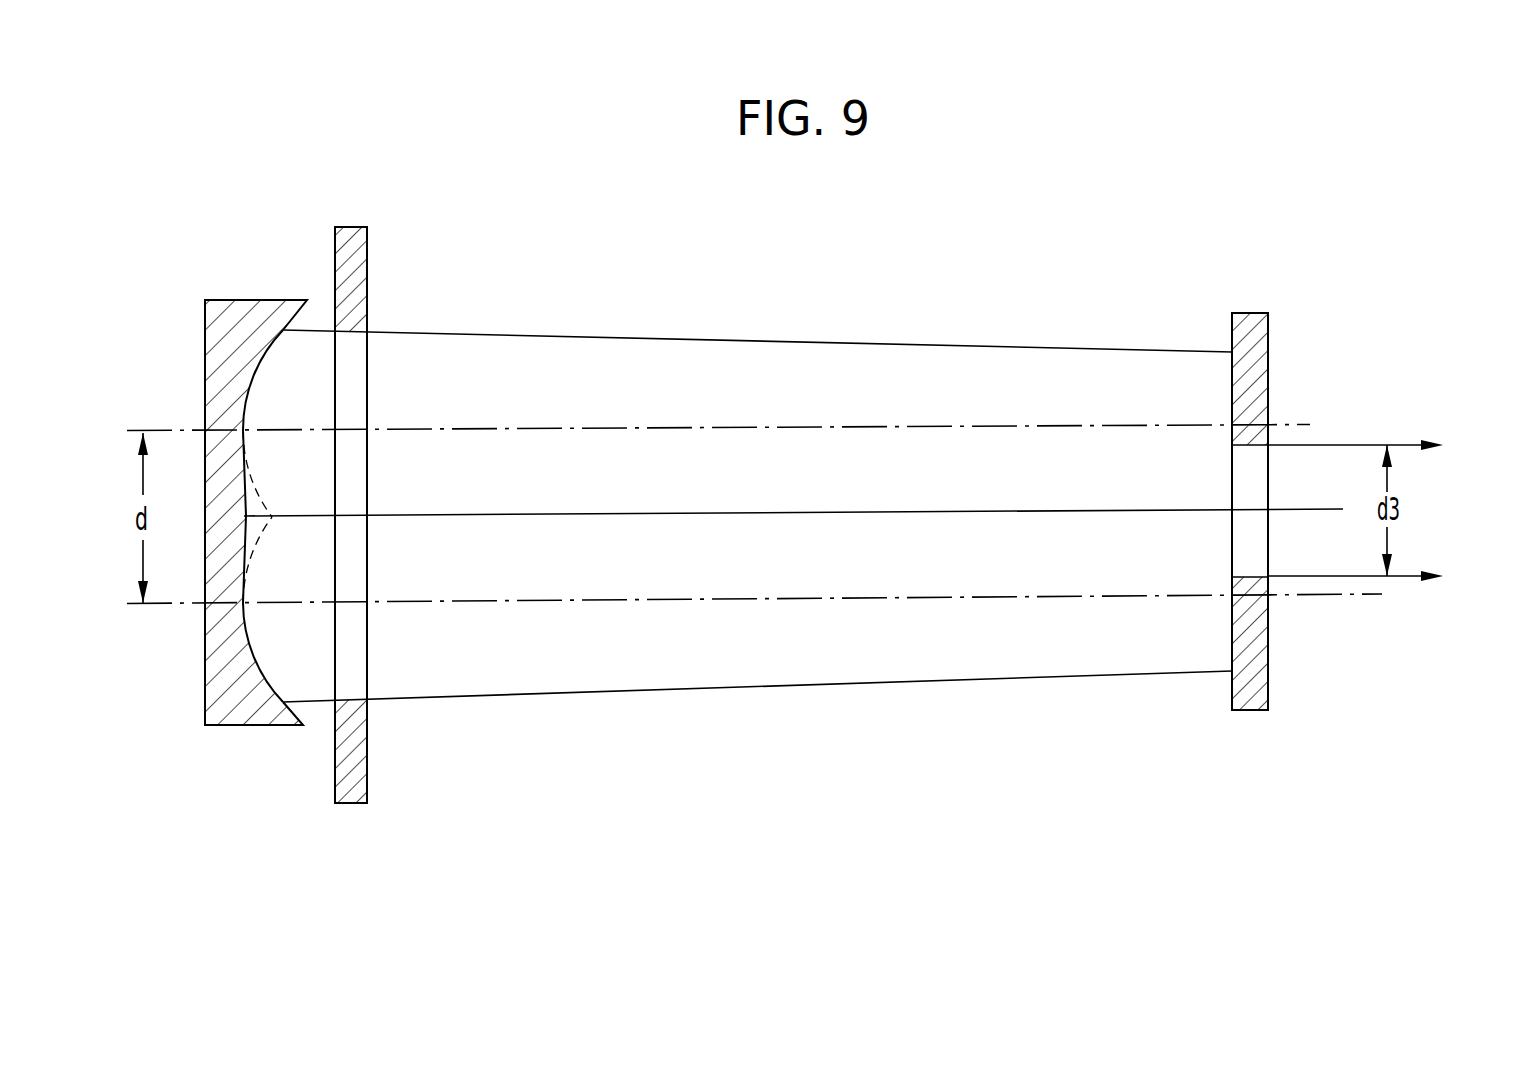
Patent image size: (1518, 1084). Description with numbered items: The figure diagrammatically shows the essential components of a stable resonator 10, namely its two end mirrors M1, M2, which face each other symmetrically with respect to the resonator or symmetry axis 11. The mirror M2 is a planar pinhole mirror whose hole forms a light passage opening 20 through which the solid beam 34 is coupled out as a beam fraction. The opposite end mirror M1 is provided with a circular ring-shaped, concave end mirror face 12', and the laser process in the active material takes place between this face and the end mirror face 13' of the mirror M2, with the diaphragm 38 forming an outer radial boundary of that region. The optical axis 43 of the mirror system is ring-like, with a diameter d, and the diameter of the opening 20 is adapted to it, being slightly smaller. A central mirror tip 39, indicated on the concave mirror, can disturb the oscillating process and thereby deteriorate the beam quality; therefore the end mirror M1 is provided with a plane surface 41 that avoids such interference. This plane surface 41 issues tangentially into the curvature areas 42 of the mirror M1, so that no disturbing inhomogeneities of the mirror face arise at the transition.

The stable resonator 10 is at (450, 745).
The resonator or symmetry axis 11 is at (968, 510).
The concave end mirror face 12' is at (329, 516).
The end mirror face 13' is at (1195, 643).
The light passage opening 20 is at (1238, 487).
The solid beam 34 is at (1442, 438).
The diaphragm 38 is at (367, 246).
The central mirror tip 39 is at (263, 503).
The plane surface 41 is at (246, 543).
The curvature areas 42 is at (256, 378).
The optical axis 43 is at (1336, 421).
The end mirror M1 is at (235, 727).
The planar pinhole mirror M2 is at (1250, 712).